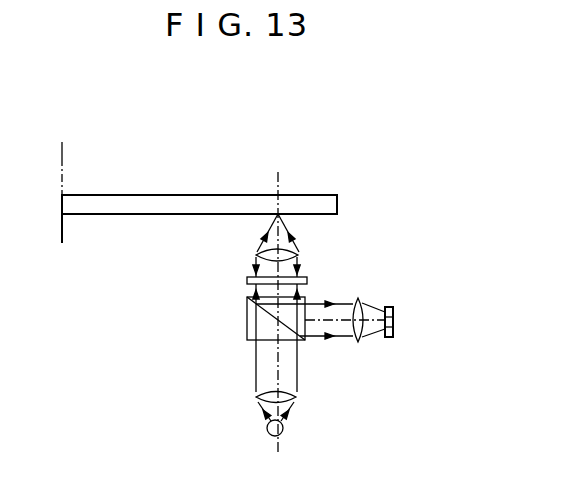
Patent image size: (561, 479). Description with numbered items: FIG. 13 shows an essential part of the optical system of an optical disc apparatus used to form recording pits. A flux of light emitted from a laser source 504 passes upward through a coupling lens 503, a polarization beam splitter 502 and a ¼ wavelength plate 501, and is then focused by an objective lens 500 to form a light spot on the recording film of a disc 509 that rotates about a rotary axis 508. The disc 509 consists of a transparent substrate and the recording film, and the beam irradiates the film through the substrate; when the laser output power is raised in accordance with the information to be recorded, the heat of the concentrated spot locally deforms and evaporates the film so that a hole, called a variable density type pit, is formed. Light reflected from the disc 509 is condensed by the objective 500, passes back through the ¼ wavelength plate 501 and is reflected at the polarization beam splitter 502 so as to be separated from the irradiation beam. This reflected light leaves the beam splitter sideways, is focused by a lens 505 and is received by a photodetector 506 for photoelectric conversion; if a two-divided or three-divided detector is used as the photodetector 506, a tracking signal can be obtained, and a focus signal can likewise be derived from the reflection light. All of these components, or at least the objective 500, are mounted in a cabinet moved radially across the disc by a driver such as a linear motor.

The objective lens 500 is at (256, 255).
The ¼ wavelength plate 501 is at (247, 280).
The polarization beam splitter 502 is at (247, 314).
The coupling lens 503 is at (256, 397).
The laser source 504 is at (267, 428).
The lens 505 is at (359, 298).
The photodetector 506 is at (392, 307).
The rotary axis 508 is at (63, 152).
The disc 509 is at (322, 195).